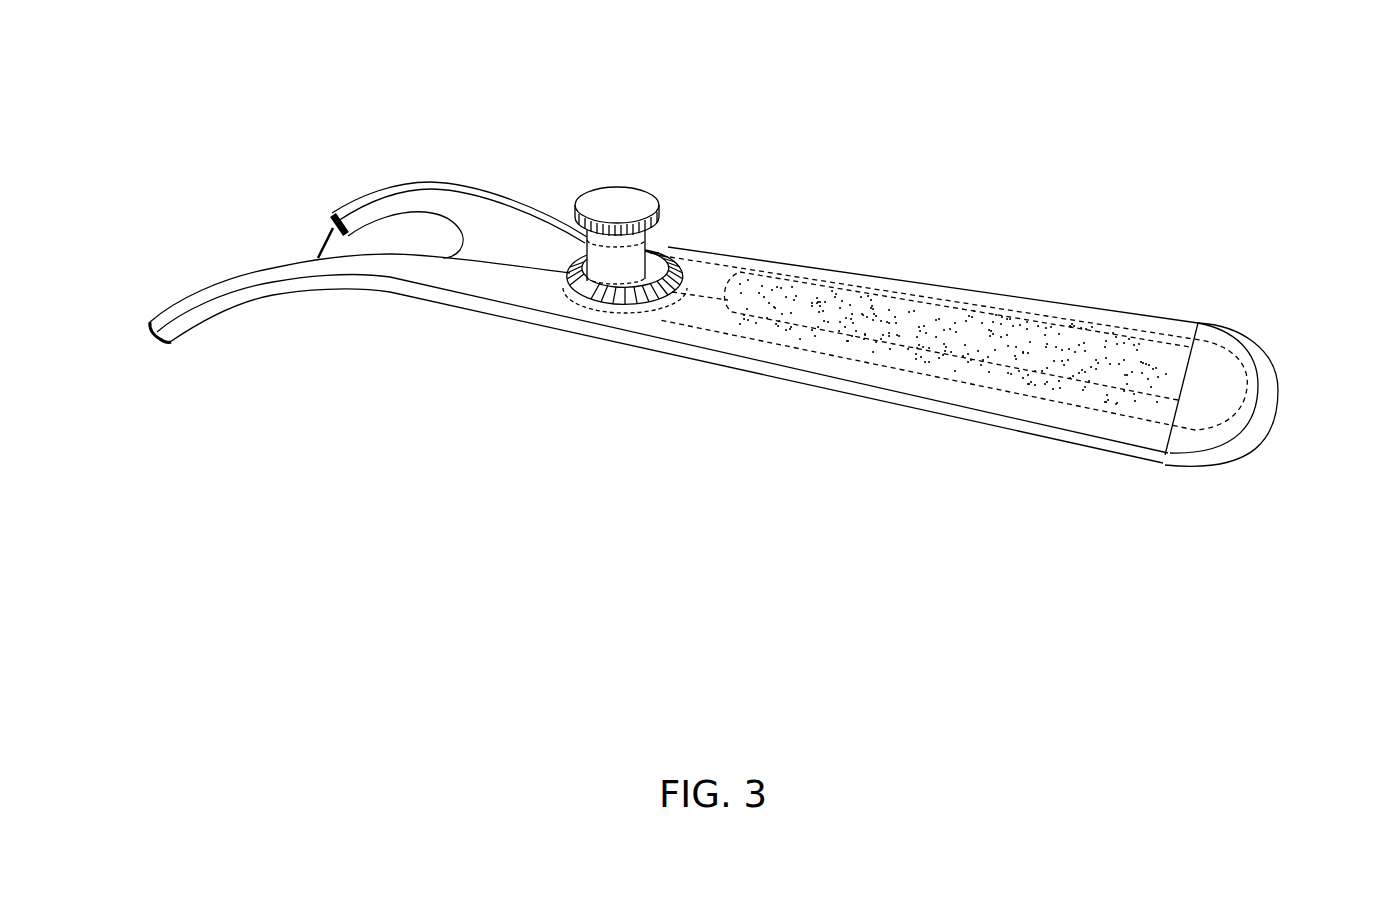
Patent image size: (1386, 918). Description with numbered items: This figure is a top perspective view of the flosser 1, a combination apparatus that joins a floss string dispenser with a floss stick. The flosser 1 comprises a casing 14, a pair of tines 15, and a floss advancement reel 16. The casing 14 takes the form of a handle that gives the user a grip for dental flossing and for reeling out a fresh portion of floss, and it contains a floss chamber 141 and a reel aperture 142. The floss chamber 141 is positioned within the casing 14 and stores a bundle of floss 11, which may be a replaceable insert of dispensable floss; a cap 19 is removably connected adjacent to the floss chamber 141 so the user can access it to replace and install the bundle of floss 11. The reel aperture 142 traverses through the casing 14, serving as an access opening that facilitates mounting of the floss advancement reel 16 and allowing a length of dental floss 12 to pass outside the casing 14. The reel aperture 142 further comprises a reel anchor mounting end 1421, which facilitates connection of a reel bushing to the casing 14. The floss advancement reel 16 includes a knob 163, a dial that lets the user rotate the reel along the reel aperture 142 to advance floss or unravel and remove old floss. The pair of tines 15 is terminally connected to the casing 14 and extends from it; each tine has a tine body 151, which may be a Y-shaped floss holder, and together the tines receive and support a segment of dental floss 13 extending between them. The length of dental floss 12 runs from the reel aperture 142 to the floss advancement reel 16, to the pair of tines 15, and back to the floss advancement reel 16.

The flosser 1 is at (833, 60).
The bundle of floss 11 is at (874, 315).
The length of dental floss 12 is at (698, 298).
The segment of dental floss 13 is at (327, 243).
The casing 14 is at (940, 219).
The floss chamber 141 is at (1144, 329).
The reel aperture 142 is at (648, 309).
The reel anchor mounting end 1421 is at (590, 320).
The pair of tines 15 is at (470, 137).
The tine body 151 is at (406, 184).
The floss advancement reel 16 is at (680, 211).
The knob 163 is at (633, 182).
The cap 19 is at (1232, 457).